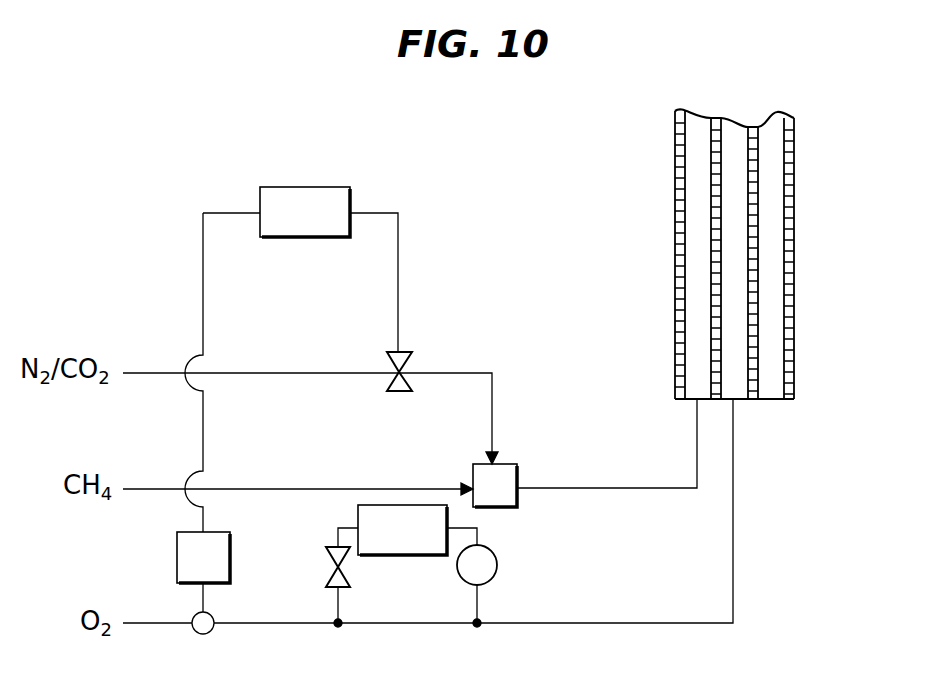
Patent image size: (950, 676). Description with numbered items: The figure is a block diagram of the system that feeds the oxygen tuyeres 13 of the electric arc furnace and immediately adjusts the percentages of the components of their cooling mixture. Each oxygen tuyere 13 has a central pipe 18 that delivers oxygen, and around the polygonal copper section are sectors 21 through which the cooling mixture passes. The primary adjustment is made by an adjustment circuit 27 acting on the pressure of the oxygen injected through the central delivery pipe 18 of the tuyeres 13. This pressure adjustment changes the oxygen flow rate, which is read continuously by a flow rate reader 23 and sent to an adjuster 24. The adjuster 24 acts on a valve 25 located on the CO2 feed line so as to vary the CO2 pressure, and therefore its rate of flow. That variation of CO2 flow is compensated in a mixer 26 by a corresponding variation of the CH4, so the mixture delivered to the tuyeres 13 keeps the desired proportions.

The oxygen tuyeres 13 is at (742, 226).
The central pipe 18 is at (737, 152).
The sectors 21 is at (696, 193).
The flow rate reader 23 is at (177, 563).
The adjuster 24 is at (309, 177).
The valve 25 is at (413, 348).
The mixer 26 is at (520, 477).
The adjustment circuit 27 is at (510, 563).